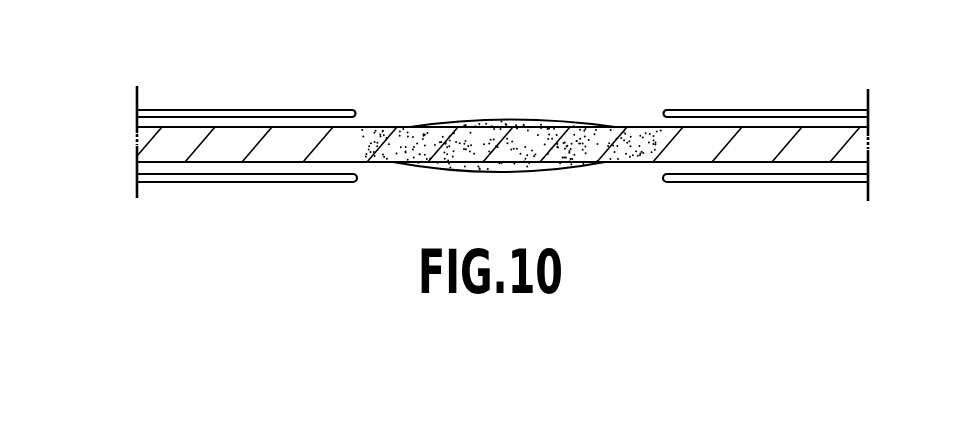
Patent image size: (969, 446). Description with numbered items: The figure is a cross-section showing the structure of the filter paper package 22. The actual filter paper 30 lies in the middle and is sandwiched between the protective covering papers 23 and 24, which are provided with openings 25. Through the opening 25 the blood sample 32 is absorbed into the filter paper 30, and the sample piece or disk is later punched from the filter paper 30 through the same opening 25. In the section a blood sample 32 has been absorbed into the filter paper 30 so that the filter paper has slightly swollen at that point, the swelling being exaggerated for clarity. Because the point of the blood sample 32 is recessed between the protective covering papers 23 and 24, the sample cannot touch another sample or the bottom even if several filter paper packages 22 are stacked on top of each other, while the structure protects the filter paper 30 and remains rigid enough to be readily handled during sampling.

The filter paper package 22 is at (449, 135).
The protective covering paper 23 is at (248, 183).
The protective covering paper 24 is at (240, 109).
The opening 25 is at (388, 100).
The filter paper 30 is at (136, 148).
The blood sample 32 is at (504, 120).